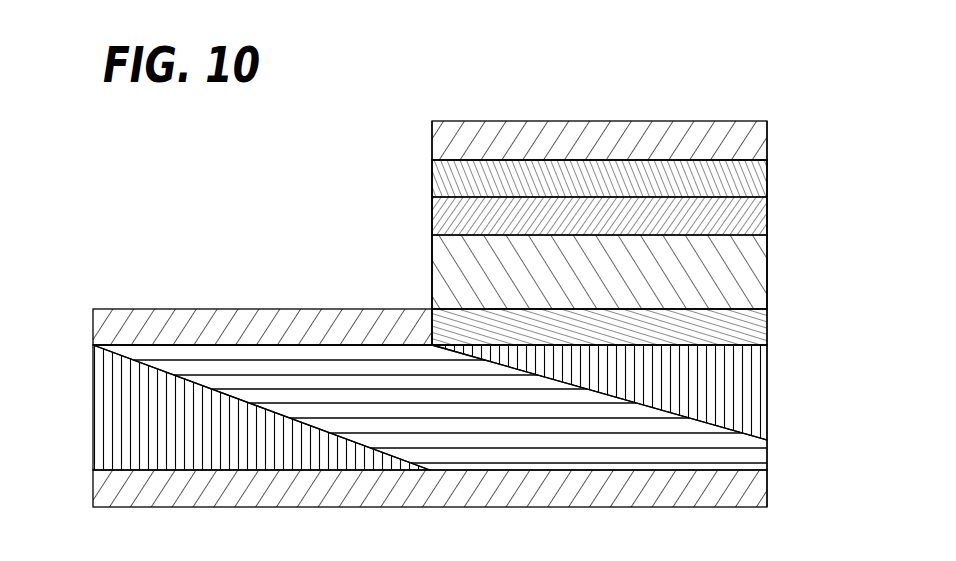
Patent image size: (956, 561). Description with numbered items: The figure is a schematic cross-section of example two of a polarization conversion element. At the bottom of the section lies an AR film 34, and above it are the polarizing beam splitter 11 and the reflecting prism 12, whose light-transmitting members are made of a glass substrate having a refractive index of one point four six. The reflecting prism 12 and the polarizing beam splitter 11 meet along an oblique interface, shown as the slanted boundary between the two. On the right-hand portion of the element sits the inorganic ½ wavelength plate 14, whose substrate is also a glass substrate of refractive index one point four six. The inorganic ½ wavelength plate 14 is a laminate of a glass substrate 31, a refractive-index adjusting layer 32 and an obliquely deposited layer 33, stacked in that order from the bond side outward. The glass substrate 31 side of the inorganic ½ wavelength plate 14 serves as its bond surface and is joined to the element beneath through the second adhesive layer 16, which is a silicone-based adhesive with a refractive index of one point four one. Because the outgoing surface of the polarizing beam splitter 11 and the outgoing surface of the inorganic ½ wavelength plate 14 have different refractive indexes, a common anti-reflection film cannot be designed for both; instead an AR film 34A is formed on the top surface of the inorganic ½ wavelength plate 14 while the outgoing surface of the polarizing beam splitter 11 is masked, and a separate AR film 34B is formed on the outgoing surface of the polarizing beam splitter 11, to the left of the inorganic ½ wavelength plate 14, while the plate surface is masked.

The polarizing beam splitter 11 is at (768, 458).
The reflecting prism 12 is at (768, 399).
The inorganic ½ wavelength plate 14 is at (644, 235).
The second adhesive layer 16 is at (768, 335).
The glass substrate 31 is at (622, 272).
The refractive-index adjusting layer 32 is at (768, 222).
The obliquely deposited layer 33 is at (770, 179).
The AR film 34 is at (768, 497).
The AR film 34A is at (770, 147).
The AR film 34B is at (100, 333).